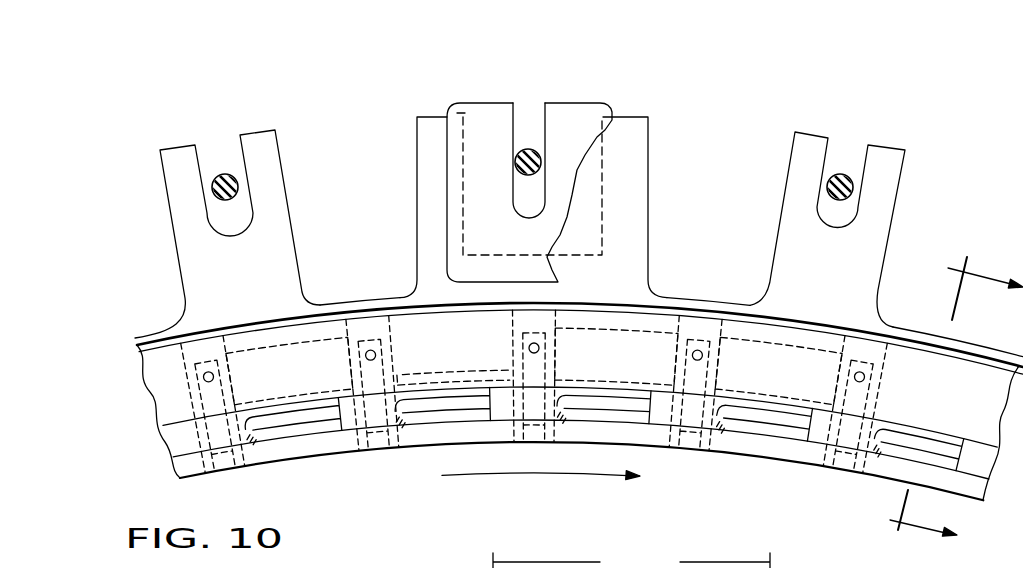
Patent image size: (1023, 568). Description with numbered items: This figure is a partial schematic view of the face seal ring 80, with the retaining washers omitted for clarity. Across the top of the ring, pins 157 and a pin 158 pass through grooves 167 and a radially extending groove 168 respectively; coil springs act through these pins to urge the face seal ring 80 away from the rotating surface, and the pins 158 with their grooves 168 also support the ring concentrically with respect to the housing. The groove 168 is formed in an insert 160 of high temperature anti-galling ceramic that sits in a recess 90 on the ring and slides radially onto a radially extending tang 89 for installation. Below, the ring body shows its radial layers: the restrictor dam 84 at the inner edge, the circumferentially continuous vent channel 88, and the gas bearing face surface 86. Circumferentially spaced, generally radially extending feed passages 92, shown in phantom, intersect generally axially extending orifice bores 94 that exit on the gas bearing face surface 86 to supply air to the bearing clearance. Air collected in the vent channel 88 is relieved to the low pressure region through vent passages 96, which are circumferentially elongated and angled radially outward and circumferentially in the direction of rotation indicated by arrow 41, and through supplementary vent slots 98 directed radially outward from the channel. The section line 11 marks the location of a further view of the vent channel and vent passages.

The groove 167 is at (199, 157).
The pin 157 is at (212, 189).
The radially extending groove 168 is at (515, 122).
The insert 160 is at (642, 92).
The pin 158 is at (523, 183).
The recess 90 is at (588, 198).
The radially extending tang 89 is at (625, 233).
The face seal ring 80 is at (932, 252).
The gas bearing face surface 86 is at (137, 357).
The orifice bore 94 is at (160, 392).
The vent channel 88 is at (173, 443).
The restrictor dam 84 is at (177, 470).
The supplementary vent slot 98 is at (534, 439).
The vent passage 96 is at (300, 413).
The feed passage 92 is at (206, 478).
The arrow indicating direction of rotation 41 is at (502, 470).
The section line 11- 11 is at (956, 405).